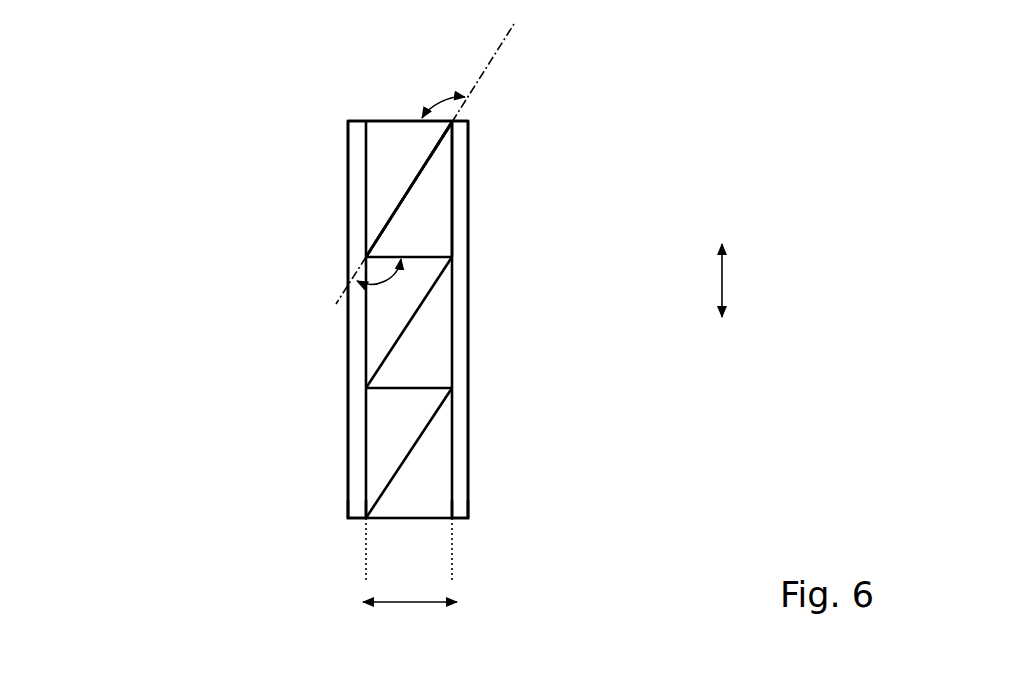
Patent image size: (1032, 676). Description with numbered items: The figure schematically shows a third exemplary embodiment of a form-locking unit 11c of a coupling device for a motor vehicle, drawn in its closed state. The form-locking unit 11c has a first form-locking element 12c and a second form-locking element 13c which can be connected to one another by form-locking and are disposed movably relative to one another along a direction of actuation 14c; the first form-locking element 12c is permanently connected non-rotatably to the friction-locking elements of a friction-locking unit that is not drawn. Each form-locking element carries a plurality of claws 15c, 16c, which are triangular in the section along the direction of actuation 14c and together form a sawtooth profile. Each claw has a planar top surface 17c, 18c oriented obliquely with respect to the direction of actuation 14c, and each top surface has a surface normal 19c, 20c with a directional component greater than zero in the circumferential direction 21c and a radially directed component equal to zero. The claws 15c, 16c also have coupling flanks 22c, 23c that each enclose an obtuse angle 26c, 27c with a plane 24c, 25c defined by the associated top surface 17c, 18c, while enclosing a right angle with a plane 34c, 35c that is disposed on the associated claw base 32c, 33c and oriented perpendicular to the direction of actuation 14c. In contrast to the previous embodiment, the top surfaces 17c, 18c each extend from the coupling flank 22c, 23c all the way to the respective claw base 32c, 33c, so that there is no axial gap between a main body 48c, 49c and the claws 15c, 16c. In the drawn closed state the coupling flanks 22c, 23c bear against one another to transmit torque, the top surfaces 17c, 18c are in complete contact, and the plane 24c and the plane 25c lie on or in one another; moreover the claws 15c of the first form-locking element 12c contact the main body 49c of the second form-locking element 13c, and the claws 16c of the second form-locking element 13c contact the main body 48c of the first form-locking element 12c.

The form-locking unit 11c is at (140, 133).
The first form-locking element 12c is at (355, 526).
The second form-locking element 13c is at (459, 527).
The direction of actuation 14c is at (420, 602).
The claws 15c is at (378, 155).
The claws 16c is at (440, 198).
The top surface 17c is at (437, 152).
The top surface 18c is at (419, 234).
The surface normal 19c is at (405, 224).
The surface normal 20c is at (384, 174).
The circumferential direction 21c is at (723, 280).
The coupling flank 22c is at (384, 118).
The coupling flank 23c is at (421, 260).
The plane 24c is at (496, 53).
The plane 25c is at (343, 289).
The obtuse angle 26c is at (437, 96).
The obtuse angle 27c is at (381, 282).
The claw base 32c is at (361, 134).
The claw base 33c is at (459, 187).
The plane 34c is at (365, 566).
The plane 35c is at (453, 577).
The main body 48c is at (353, 444).
The main body 49c is at (458, 445).